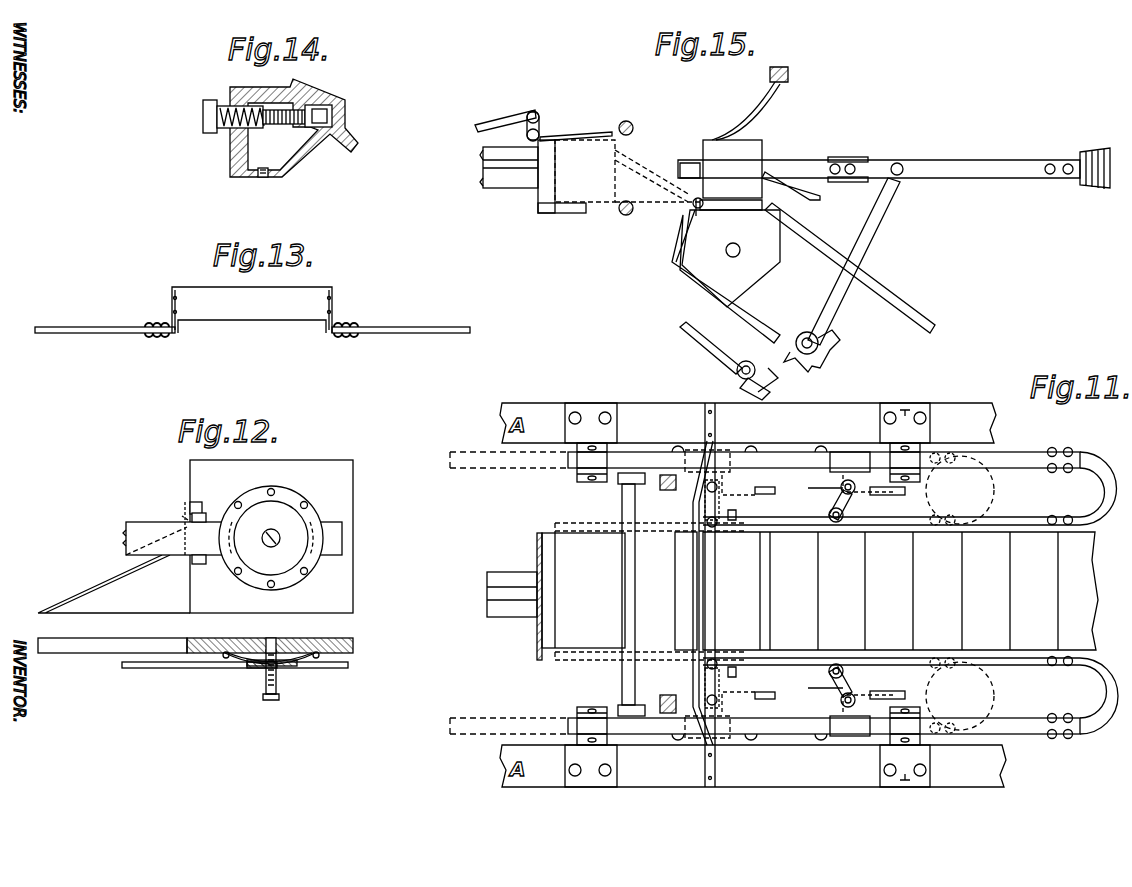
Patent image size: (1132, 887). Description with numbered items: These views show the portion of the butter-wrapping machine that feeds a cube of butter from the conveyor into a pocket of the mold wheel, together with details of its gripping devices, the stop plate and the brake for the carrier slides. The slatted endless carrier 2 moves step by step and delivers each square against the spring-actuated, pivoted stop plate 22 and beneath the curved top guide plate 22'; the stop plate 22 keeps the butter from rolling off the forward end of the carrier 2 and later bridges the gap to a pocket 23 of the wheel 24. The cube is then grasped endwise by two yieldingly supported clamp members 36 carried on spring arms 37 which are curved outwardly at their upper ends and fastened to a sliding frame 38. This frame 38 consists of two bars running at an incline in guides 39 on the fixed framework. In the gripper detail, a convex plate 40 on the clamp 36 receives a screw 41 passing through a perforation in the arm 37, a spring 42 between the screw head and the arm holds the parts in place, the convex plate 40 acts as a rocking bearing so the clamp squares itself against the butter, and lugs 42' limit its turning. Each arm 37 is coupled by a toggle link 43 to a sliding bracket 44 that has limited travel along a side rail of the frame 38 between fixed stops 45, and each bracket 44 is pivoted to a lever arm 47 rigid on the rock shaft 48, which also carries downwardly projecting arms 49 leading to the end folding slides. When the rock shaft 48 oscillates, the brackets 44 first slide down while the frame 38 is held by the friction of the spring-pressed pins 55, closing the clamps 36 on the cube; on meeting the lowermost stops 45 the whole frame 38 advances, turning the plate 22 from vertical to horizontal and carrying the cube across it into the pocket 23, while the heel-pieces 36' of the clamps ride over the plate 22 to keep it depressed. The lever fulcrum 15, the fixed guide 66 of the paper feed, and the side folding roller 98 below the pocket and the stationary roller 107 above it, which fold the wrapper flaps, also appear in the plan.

In FIG. 11, the slatted endless carrier 2 is at (886, 591).
In FIG. 11, the fulcrum 15 is at (806, 742).
In FIG. 13, the stop plate 22 is at (252, 318).
In FIG. 15, the stop plate 22 is at (717, 253).
In FIG. 11, the stop plate 22 is at (713, 593).
In FIG. 15, the curved top guide plate 22' is at (745, 132).
In FIG. 15, the pocket 23 is at (583, 136).
In FIG. 11, the pocket 23 is at (537, 547).
In FIG. 15, the wheel 24 is at (510, 183).
In FIG. 11, the wheel 24 is at (505, 607).
In FIG. 12, the clamp member 36 is at (288, 556).
In FIG. 12, the heel-piece 36' is at (114, 617).
In FIG. 12, the spring arm 37 is at (335, 556).
In FIG. 11, the spring arm 37 is at (793, 530).
In FIG. 14, the sliding frame 38 is at (333, 112).
In FIG. 15, the sliding frame 38 is at (960, 162).
In FIG. 11, the sliding frame 38 is at (1000, 456).
In FIG. 14, the guide 39 is at (276, 175).
In FIG. 11, the guide 39 is at (576, 478).
In FIG. 12, the convex plate 40 is at (245, 663).
In FIG. 12, the screw 41 is at (272, 545).
In FIG. 11, the screw 41 is at (745, 508).
In FIG. 12, the spring 42 is at (277, 666).
In FIG. 12, the lug 42' is at (205, 538).
In FIG. 11, the link 43 is at (840, 489).
In FIG. 15, the sliding bracket 44 is at (848, 158).
In FIG. 11, the sliding bracket 44 is at (885, 496).
In FIG. 11, the fixed stop 45 is at (868, 446).
In FIG. 15, the lever arm 47 is at (870, 245).
In FIG. 11, the lever arm 47 is at (825, 602).
In FIG. 15, the rock shaft 48 is at (820, 336).
In FIG. 15, the downwardly projecting arm 49 is at (766, 364).
In FIG. 14, the spring-pressed pin 55 is at (276, 128).
In FIG. 11, the spring-pressed pin 55 is at (905, 408).
In FIG. 11, the fixed guide 66 is at (662, 489).
In FIG. 15, the roller 98 is at (622, 216).
In FIG. 15, the roller 107 is at (628, 121).
In FIG. 11, the roller 107 is at (636, 588).